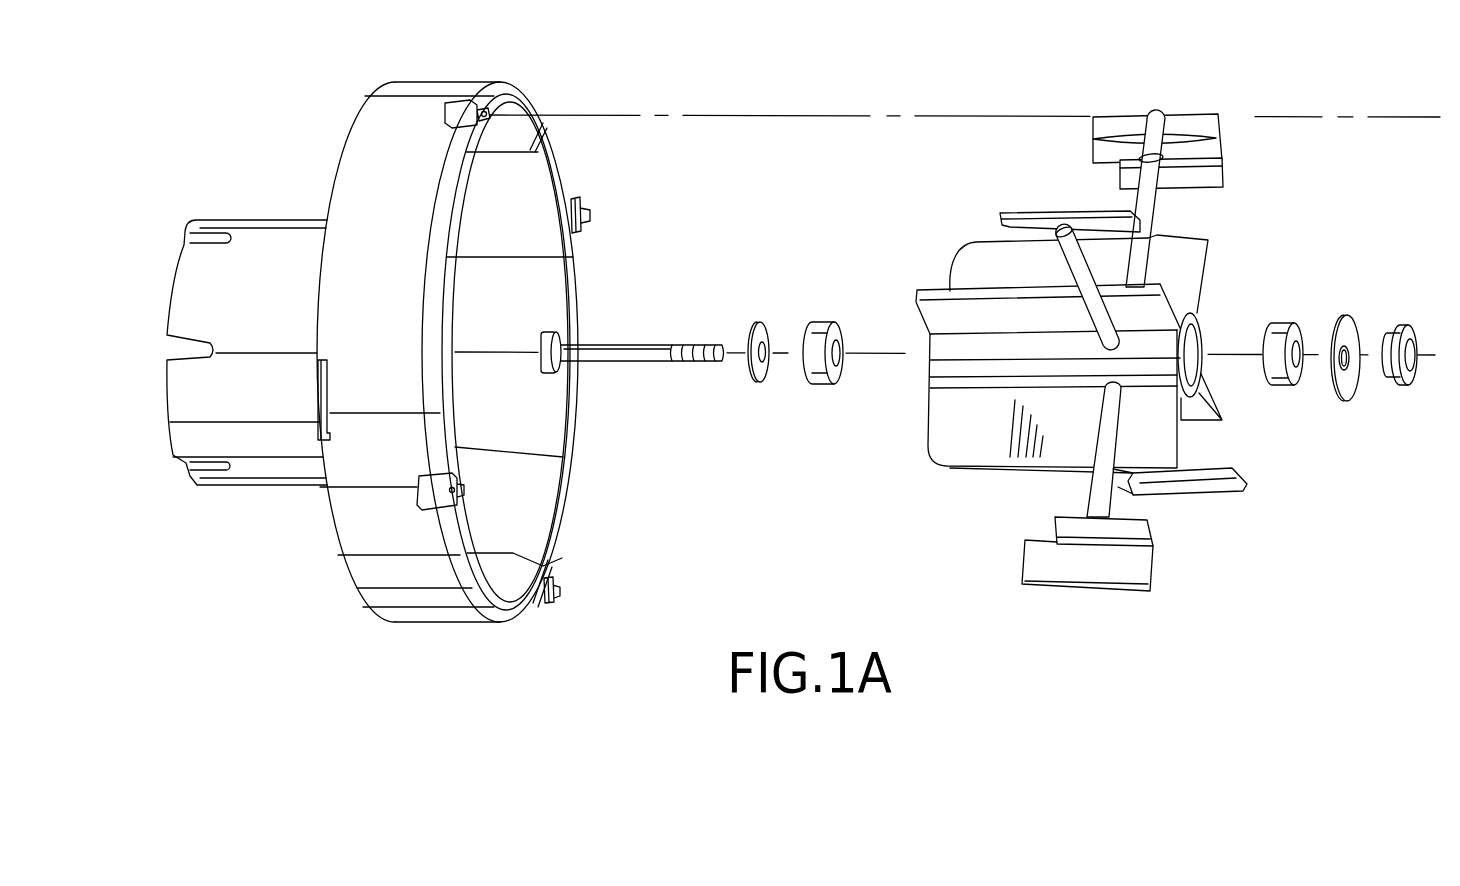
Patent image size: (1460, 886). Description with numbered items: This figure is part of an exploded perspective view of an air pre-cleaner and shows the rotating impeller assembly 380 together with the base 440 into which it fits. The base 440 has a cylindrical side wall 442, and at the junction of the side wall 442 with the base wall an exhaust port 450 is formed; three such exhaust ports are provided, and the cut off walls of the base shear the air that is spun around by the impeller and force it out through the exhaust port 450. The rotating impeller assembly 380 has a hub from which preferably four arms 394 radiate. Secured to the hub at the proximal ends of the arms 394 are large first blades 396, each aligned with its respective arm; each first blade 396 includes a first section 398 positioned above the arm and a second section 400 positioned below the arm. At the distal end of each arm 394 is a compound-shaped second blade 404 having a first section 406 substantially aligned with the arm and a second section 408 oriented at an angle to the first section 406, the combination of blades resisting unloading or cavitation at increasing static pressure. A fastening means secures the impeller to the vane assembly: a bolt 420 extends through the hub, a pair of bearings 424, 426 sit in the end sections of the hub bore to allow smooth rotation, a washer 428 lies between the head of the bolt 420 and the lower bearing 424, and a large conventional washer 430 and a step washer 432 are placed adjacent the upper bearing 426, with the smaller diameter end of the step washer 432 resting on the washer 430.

The rotating impeller assembly 380 is at (1087, 375).
The arms 394 is at (1148, 198).
The first blades 396 is at (978, 483).
The first section 398 is at (1157, 450).
The second section 400 is at (938, 441).
The second blade 404 is at (1240, 151).
The first section 406 is at (1138, 567).
The second section 408 is at (1145, 531).
The bolt 420 is at (627, 361).
The bearing 424 is at (822, 320).
The bearing 426 is at (1280, 318).
The washer 428 is at (765, 378).
The washer 430 is at (1355, 323).
The step washer 432 is at (1401, 392).
The base 440 is at (378, 368).
The side wall 442 is at (407, 109).
The exhaust port 450 is at (322, 392).